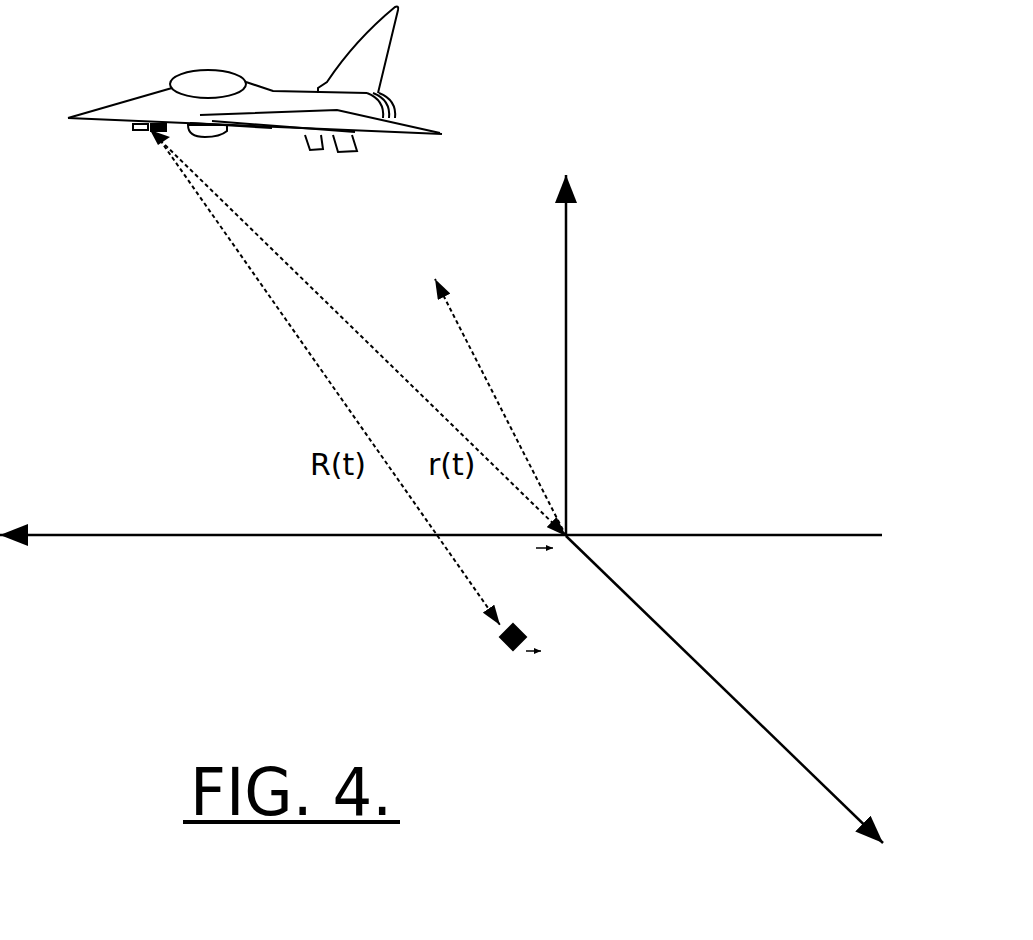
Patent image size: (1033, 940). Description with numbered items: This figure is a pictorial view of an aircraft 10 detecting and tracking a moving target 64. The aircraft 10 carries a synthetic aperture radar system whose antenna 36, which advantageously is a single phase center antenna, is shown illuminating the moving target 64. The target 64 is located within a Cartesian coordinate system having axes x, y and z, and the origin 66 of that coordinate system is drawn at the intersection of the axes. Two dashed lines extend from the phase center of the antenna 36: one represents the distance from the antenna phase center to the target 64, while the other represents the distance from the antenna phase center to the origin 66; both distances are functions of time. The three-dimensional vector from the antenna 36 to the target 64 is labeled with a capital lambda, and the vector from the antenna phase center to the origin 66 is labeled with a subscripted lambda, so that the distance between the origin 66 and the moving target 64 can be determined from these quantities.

The aircraft 10 is at (198, 68).
The antenna 36 is at (138, 143).
The moving target 64 is at (498, 655).
The origin 66 is at (578, 520).